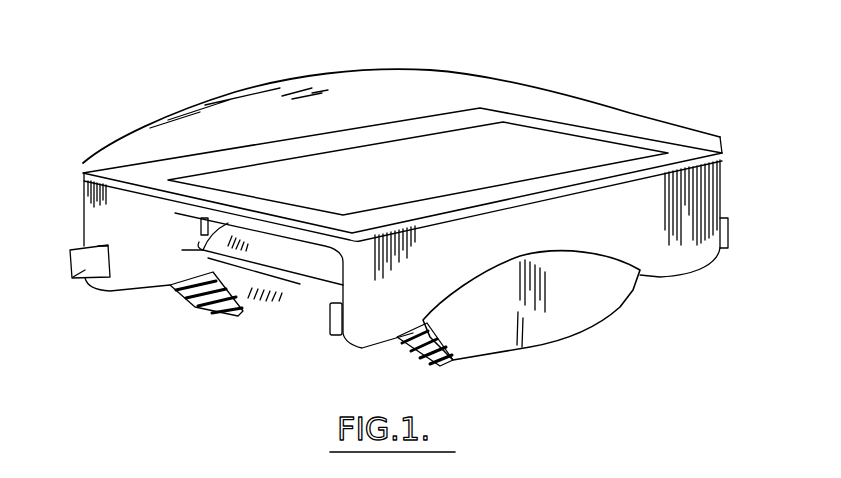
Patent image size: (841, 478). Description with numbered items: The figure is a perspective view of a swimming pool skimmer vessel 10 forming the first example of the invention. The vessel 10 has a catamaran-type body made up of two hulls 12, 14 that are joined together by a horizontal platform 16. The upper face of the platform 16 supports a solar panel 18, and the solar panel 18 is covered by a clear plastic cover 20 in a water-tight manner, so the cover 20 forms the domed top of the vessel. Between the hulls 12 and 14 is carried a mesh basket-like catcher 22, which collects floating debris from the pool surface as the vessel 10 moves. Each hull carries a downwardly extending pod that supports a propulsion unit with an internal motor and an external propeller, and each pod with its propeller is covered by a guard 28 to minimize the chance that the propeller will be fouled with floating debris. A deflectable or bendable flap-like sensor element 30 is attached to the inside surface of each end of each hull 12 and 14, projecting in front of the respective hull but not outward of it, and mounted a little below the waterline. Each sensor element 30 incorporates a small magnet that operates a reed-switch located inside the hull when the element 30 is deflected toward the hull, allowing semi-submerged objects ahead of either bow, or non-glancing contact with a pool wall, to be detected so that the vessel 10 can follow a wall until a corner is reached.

The vessel 10 is at (386, 212).
The hull 12 is at (109, 218).
The hull 14 is at (697, 257).
The horizontal platform 16 is at (179, 211).
The solar panel 18 is at (438, 170).
The clear plastic cover 20 is at (346, 88).
The catcher 22 is at (302, 292).
The guard 28 is at (583, 313).
The sensor element 30 is at (68, 282).